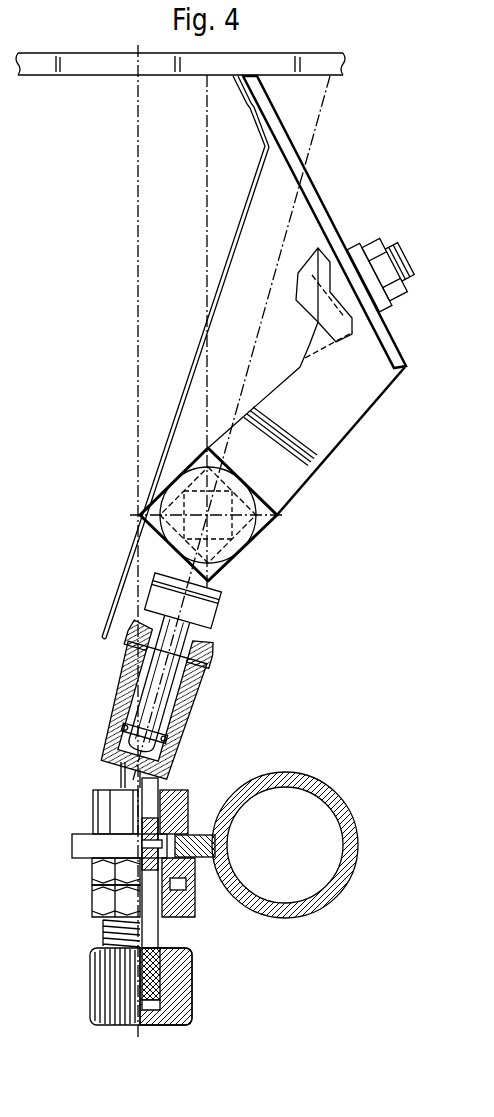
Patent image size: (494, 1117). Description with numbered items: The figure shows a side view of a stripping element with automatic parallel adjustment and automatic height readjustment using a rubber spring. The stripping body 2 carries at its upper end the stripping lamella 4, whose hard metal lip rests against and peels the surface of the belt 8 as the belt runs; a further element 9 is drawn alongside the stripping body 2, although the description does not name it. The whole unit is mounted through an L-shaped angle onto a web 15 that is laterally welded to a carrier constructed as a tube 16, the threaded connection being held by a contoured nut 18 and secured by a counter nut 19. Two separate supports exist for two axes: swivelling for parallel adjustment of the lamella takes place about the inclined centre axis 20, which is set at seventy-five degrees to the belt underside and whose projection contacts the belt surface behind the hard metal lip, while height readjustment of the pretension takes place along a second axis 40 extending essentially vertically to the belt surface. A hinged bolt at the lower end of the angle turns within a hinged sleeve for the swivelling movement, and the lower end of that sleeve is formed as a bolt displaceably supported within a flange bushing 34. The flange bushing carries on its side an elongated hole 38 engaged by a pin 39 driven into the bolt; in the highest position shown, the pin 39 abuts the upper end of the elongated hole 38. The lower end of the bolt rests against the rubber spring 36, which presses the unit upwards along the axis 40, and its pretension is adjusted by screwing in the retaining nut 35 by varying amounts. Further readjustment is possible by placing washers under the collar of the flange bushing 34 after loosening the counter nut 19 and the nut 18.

The stripping body 2 is at (330, 433).
The stripping lamella 4 is at (318, 203).
The belt 8 is at (86, 67).
The rod 9 is at (192, 363).
The web 15 is at (72, 845).
The tube 16 is at (297, 773).
The contoured nut 18 is at (94, 873).
The counter nut 19 is at (95, 902).
The centre axis 20 is at (317, 128).
The flange bushing 34 is at (93, 805).
The retaining nut 35 is at (90, 970).
The rubber spring 36 is at (191, 990).
The elongated hole 38 is at (172, 872).
The pin 39 is at (140, 823).
The second axis 40 is at (137, 182).